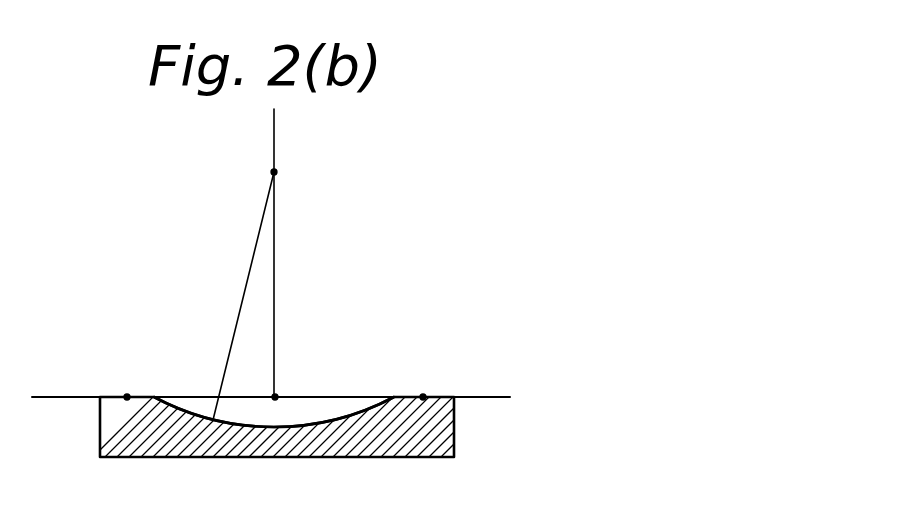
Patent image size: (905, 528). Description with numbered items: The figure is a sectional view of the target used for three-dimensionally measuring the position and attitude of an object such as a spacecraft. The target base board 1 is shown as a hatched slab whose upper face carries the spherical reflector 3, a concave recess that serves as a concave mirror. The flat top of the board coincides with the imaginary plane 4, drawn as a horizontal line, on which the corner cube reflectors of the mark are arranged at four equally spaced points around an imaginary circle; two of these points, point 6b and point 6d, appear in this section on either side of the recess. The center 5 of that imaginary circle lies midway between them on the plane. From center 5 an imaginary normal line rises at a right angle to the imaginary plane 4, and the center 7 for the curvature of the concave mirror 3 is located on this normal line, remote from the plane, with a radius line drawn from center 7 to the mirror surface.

The target base board 1 is at (454, 440).
The spherical reflector 3 is at (342, 412).
The imaginary plane 4 is at (495, 397).
The center of the imaginary circle 5 is at (276, 396).
The point 6b is at (127, 396).
The point 6d is at (423, 396).
The center of curvature 7 is at (274, 172).